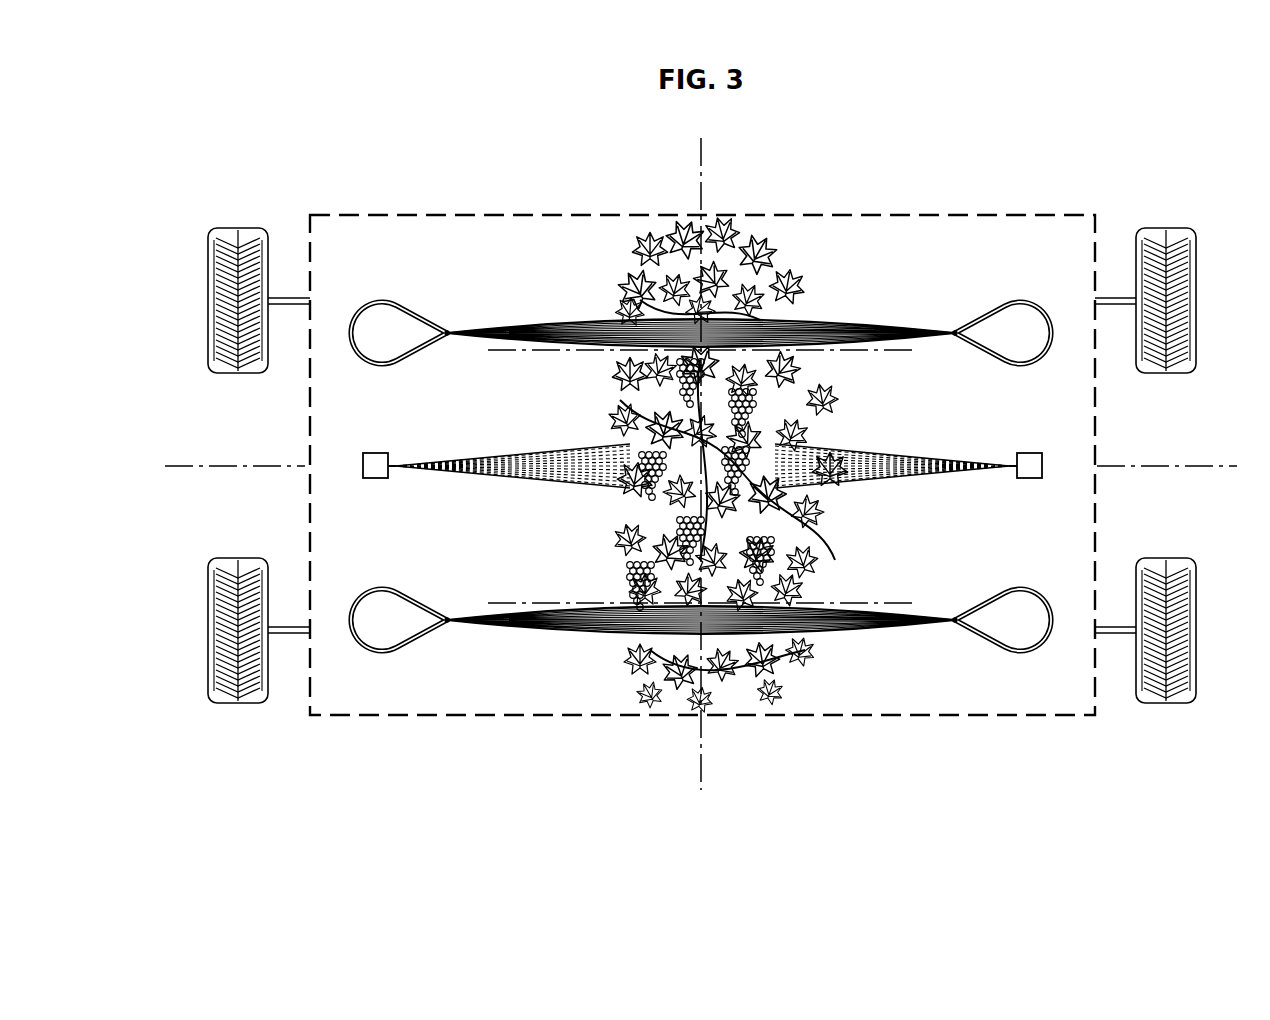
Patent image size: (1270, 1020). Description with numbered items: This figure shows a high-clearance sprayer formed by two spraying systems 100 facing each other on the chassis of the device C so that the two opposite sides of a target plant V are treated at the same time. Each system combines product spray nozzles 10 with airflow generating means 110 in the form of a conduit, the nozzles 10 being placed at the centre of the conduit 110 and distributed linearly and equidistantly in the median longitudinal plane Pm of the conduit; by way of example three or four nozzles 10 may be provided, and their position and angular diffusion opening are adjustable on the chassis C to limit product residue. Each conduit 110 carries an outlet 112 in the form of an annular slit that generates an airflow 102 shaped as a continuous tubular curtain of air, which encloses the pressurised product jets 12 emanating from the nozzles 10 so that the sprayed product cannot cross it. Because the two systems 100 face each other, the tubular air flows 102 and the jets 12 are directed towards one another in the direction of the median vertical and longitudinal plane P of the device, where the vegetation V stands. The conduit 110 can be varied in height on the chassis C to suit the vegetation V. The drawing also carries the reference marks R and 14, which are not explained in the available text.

The product spray nozzle 10 is at (348, 468).
The product jet 12 is at (538, 462).
The spray plane reference line 14 is at (884, 352).
The system 100 is at (372, 292).
The airflow 102 is at (584, 626).
The airflow generating means 110 is at (386, 584).
The outlet 112 is at (452, 328).
The wheel R is at (216, 228).
The chassis of the device C is at (798, 215).
The target plant V is at (822, 290).
The median longitudinal plane of the conduit Pm is at (186, 466).
The median vertical and longitudinal plane of the device P is at (701, 774).